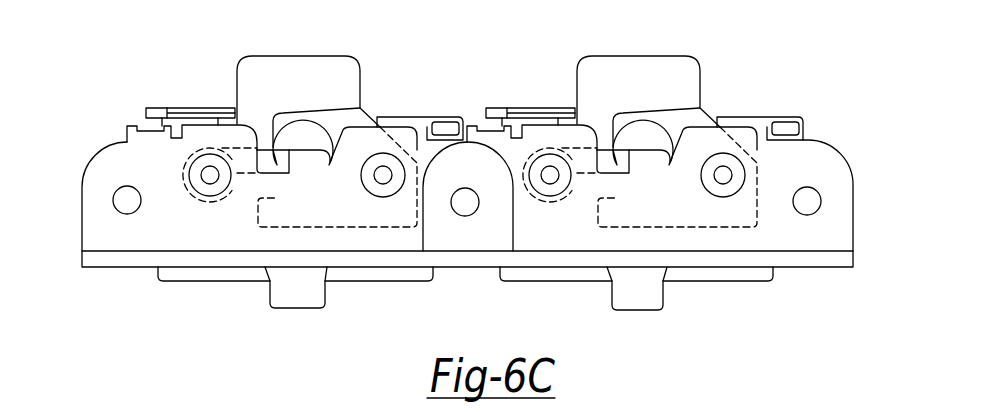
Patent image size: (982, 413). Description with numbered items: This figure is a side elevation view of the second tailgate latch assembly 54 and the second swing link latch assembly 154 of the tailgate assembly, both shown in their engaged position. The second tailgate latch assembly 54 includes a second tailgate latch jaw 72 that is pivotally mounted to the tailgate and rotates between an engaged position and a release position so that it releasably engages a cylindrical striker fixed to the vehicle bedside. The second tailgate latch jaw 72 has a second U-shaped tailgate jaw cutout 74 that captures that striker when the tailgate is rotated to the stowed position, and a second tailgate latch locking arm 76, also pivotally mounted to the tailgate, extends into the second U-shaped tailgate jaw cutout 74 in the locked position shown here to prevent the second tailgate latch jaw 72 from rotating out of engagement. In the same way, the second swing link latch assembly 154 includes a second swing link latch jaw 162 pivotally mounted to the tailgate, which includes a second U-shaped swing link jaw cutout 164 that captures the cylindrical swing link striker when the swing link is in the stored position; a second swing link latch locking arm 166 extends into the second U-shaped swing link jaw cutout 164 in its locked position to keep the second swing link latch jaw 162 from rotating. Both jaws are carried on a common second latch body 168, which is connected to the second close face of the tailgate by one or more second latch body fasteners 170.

The second tailgate latch assembly 54 is at (718, 334).
The second swing link latch assembly 154 is at (135, 293).
The second swing link latch jaw 162 is at (318, 122).
The second U-shaped swing link jaw cutout 164 is at (303, 182).
The second swing link latch locking arm 166 is at (268, 160).
The common second latch body 168 is at (376, 237).
The second latch body fasteners 170 is at (121, 195).
The second tailgate latch jaw 72 is at (651, 127).
The second U-shaped tailgate jaw cutout 74 is at (645, 185).
The second tailgate latch locking arm 76 is at (611, 157).